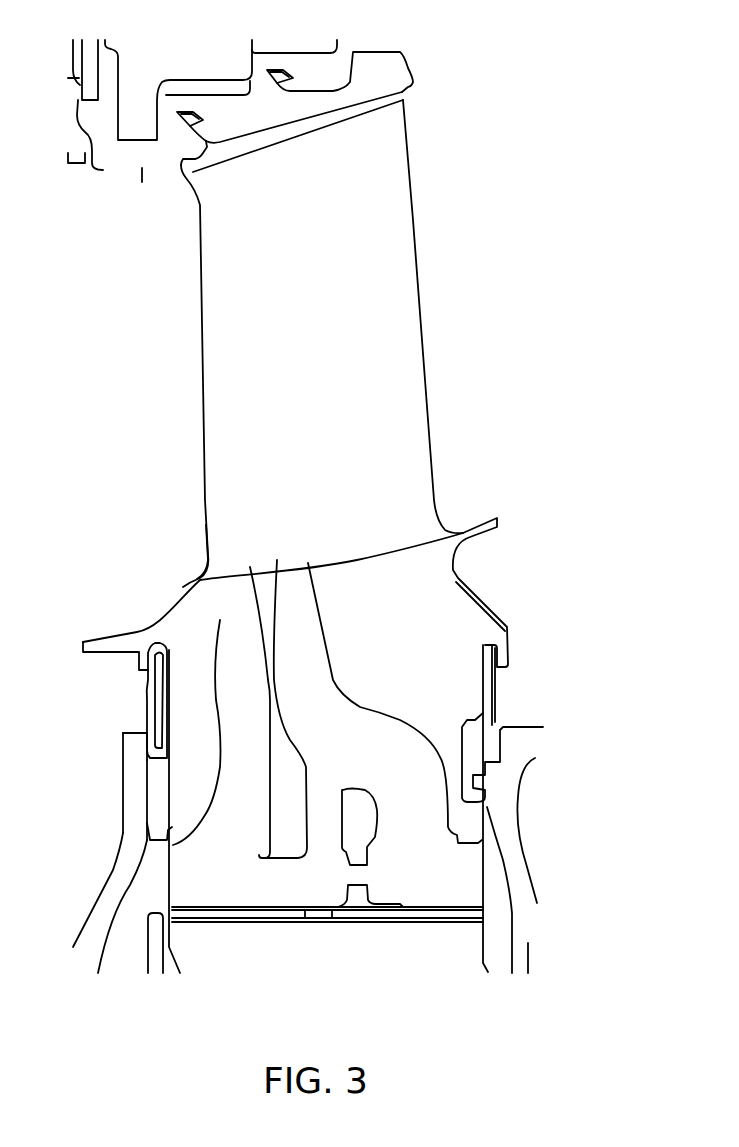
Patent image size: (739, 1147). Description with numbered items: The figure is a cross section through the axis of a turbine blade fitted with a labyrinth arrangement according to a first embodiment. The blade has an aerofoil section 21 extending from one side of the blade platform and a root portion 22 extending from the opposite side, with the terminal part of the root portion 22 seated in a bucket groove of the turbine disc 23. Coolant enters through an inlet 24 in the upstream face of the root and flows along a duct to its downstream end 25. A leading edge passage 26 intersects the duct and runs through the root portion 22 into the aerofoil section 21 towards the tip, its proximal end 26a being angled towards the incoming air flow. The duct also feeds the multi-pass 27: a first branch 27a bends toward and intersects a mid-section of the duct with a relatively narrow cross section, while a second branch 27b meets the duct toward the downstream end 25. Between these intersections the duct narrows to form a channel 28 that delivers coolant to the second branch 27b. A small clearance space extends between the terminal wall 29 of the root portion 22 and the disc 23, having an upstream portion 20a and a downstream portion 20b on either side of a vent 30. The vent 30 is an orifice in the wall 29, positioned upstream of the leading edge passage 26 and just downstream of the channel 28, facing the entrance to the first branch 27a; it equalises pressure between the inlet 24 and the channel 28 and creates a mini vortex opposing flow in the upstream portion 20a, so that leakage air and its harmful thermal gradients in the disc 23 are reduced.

The clearance space upstream portion 20a is at (232, 920).
The clearance space downstream portion 20b is at (388, 925).
The aerofoil section 21 is at (395, 273).
The root portion 22 is at (458, 647).
The turbine disc 23 is at (460, 950).
The inlet 24 is at (187, 880).
The downstream end 25 is at (457, 895).
The leading edge passage 26 is at (230, 690).
The proximal end of the leading edge passage 26a is at (205, 842).
The multi-pass 27 is at (308, 650).
The first branch of the multi-pass 27a is at (327, 800).
The second branch of the multi-pass 27b is at (437, 823).
The channel 28 is at (357, 873).
The terminal wall 29 is at (243, 915).
The vent 30 is at (317, 918).